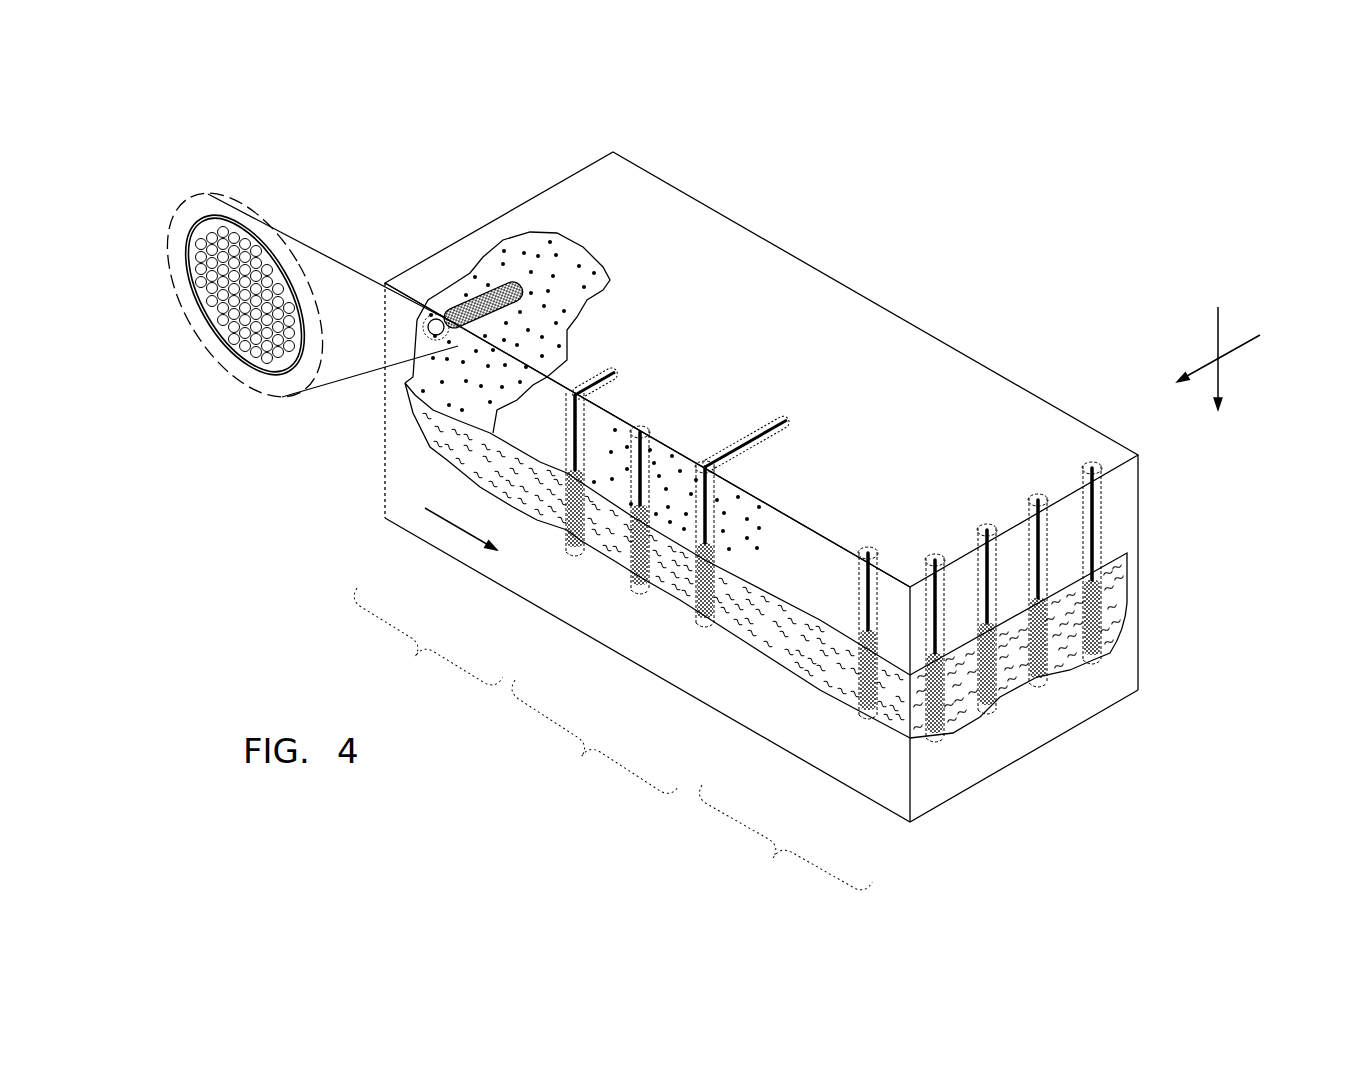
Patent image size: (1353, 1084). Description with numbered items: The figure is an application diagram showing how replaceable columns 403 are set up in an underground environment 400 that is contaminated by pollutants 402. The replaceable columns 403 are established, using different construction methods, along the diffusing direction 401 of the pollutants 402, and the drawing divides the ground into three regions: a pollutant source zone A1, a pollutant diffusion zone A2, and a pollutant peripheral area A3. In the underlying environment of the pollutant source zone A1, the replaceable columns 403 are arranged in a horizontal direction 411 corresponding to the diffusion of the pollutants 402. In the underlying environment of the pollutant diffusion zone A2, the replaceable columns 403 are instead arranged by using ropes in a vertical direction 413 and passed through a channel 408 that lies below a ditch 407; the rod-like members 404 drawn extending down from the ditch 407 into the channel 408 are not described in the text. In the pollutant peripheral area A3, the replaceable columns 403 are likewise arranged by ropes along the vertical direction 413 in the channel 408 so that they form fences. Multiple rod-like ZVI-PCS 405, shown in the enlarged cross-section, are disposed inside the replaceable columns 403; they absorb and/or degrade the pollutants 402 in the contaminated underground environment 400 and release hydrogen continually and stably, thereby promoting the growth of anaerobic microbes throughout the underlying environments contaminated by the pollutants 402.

The underground environment 400 is at (536, 168).
The diffusing direction 401 is at (436, 518).
The pollutants 402 is at (405, 385).
The replaceable column 403 is at (185, 200).
The rod 404 is at (617, 370).
The rod-like ZVI-PCS 405 is at (192, 296).
The ditch 407 is at (612, 365).
The channel 408 is at (633, 440).
The horizontal direction 411 is at (1248, 345).
The vertical direction 413 is at (1222, 320).
The pollutant source zone A1 is at (422, 644).
The pollutant diffusion zone A2 is at (589, 745).
The pollutant peripheral area A3 is at (780, 845).